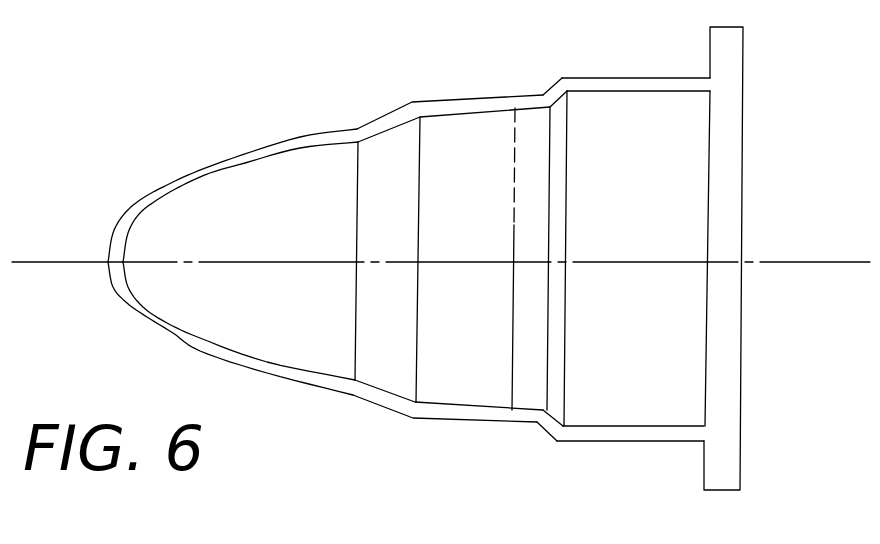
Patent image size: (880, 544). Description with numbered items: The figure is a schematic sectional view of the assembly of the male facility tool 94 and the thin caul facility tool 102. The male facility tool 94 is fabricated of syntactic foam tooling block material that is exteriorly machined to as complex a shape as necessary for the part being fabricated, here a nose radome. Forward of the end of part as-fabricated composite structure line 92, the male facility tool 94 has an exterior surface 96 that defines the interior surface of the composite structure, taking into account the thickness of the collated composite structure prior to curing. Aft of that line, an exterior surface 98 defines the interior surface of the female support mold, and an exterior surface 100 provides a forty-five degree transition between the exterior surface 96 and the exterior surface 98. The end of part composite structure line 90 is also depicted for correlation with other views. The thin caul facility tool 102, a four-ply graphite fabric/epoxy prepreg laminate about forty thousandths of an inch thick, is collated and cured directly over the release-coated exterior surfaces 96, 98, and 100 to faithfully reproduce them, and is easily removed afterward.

The end of part composite structure line 90 is at (515, 237).
The end of part as-fabricated composite structure line 92 is at (550, 207).
The male facility tool 94 is at (743, 133).
The exterior surface 96 is at (233, 173).
The exterior surface 98 is at (627, 91).
The exterior surface 100 is at (558, 98).
The thin caul facility tool 102 is at (391, 114).